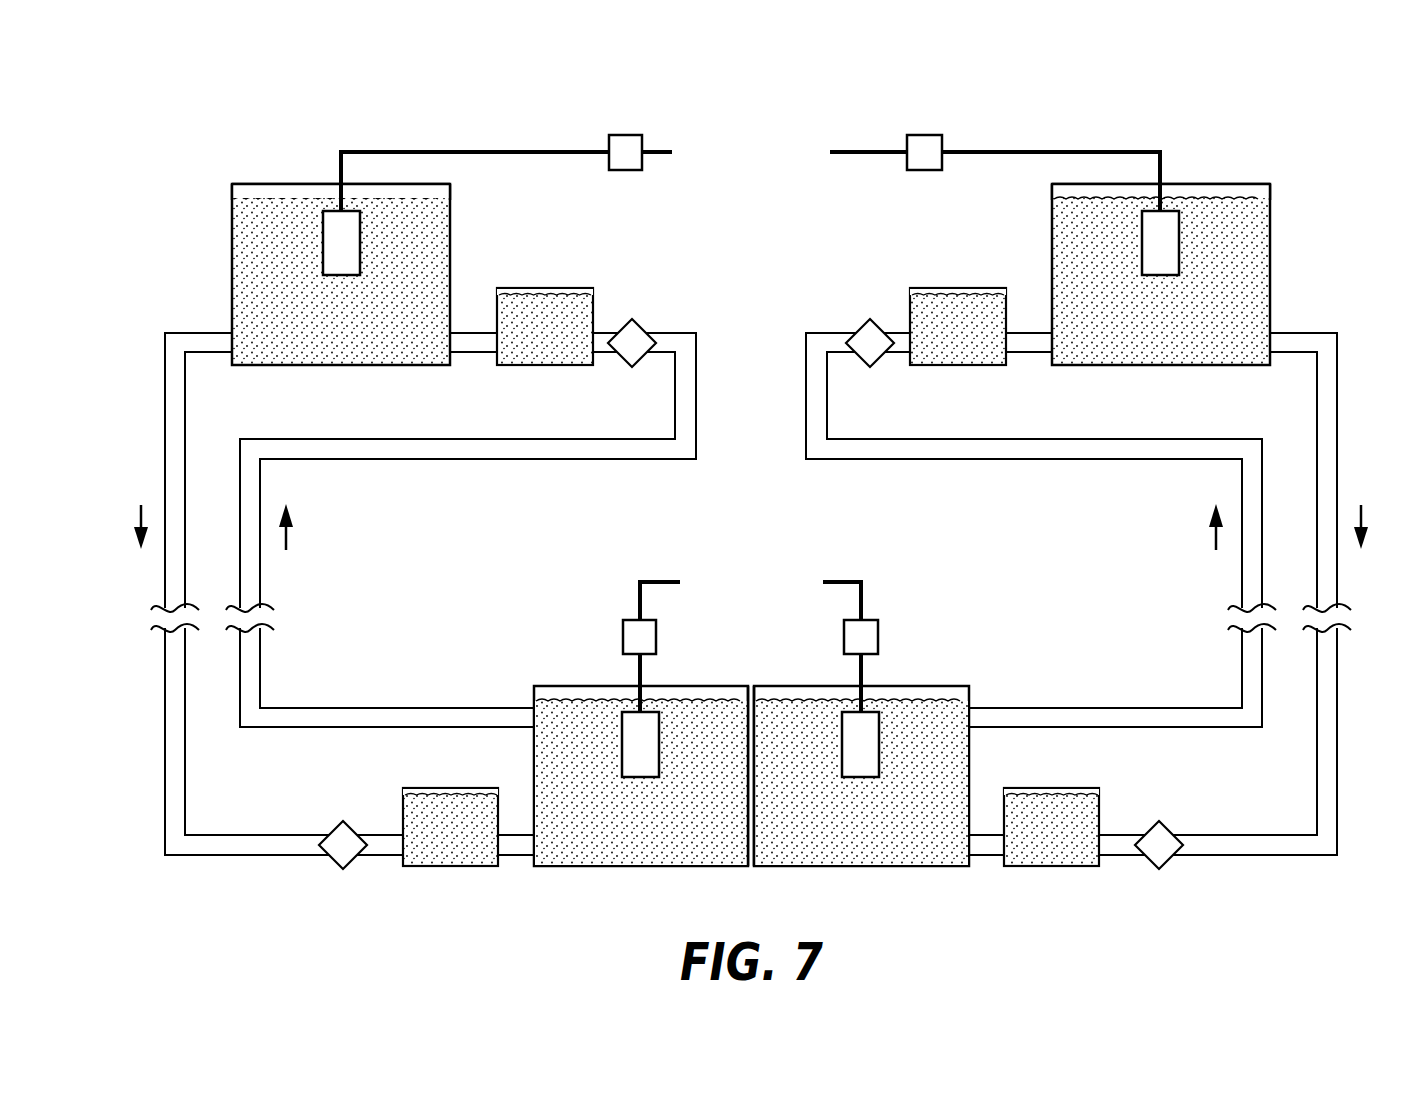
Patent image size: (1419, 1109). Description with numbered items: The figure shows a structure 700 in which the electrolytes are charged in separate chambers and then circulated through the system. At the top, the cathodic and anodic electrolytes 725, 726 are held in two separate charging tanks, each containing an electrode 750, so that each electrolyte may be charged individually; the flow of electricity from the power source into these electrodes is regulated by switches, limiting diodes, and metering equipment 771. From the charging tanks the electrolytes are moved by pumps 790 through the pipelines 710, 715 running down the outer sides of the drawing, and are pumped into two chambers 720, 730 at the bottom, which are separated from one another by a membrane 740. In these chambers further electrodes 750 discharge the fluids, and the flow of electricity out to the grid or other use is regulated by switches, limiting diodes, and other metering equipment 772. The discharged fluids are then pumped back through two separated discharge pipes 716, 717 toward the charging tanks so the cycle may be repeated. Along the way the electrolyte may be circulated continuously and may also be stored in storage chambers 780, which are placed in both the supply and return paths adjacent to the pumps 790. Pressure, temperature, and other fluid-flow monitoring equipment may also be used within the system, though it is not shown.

The structure 700 is at (1287, 143).
The pipeline 710 is at (165, 397).
The pipeline 715 is at (1337, 393).
The discharge pipe 716 is at (378, 457).
The discharge pipe 717 is at (1145, 457).
The chamber 720 is at (568, 686).
The cathodic electrolyte 725 is at (633, 857).
The anodic electrolyte 726 is at (860, 857).
The chamber 730 is at (943, 686).
The membrane 740 is at (762, 705).
The electrode 750 is at (330, 226).
The metering equipment 771 is at (623, 135).
The metering equipment 772 is at (623, 627).
The storage chamber 780 is at (556, 288).
The pump 790 is at (645, 325).